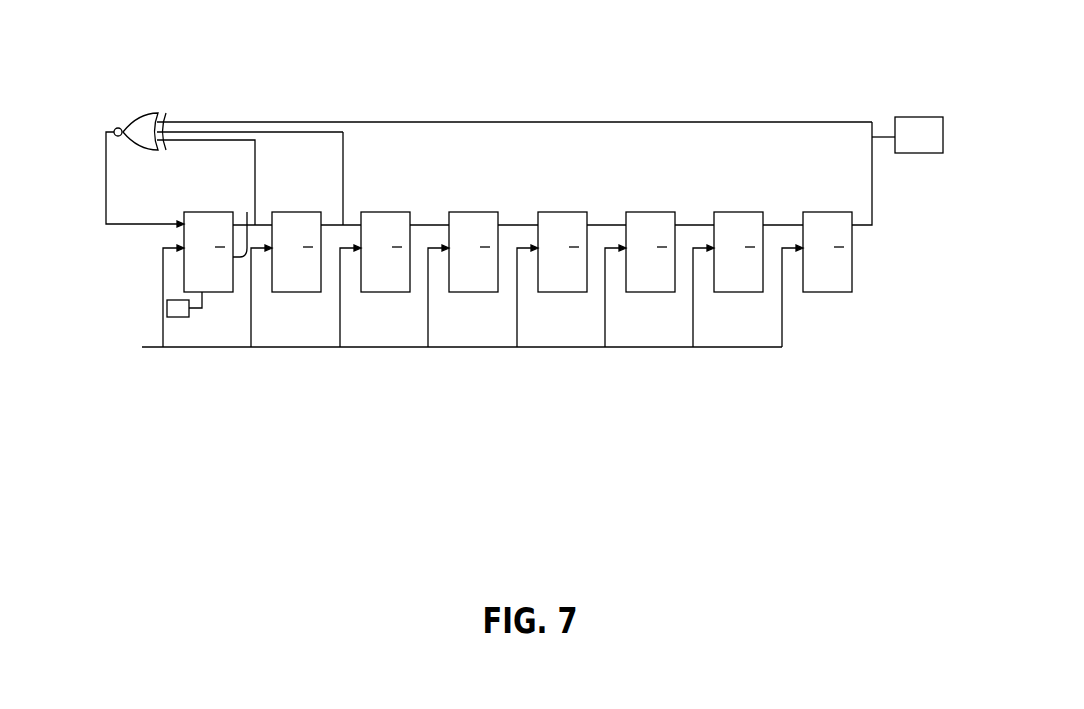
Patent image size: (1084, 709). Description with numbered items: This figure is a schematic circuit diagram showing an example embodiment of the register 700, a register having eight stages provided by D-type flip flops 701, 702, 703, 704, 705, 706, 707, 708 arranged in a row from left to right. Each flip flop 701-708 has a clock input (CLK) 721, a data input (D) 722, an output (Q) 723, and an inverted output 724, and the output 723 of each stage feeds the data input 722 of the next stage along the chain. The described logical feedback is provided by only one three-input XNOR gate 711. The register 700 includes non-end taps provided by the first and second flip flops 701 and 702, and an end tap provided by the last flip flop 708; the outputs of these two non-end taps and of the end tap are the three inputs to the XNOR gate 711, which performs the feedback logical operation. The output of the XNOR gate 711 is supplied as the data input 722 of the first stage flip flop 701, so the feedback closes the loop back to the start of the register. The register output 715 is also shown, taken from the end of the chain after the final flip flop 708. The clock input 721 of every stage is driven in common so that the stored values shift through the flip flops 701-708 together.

The register 700 is at (642, 78).
The D-type flip flop 701 is at (224, 294).
The D-type flip flop 702 is at (309, 294).
The D-type flip flop 703 is at (397, 294).
The D-type flip flop 704 is at (492, 294).
The D-type flip flop 705 is at (577, 294).
The D-type flip flop 706 is at (660, 294).
The D-type flip flop 707 is at (745, 294).
The D-type flip flop 708 is at (820, 294).
The three-input XNOR gate 711 is at (140, 112).
The register output 715 is at (927, 116).
The clock input 721 is at (197, 258).
The data input 722 is at (191, 231).
The output 723 is at (222, 210).
The inverted output 724 is at (247, 212).